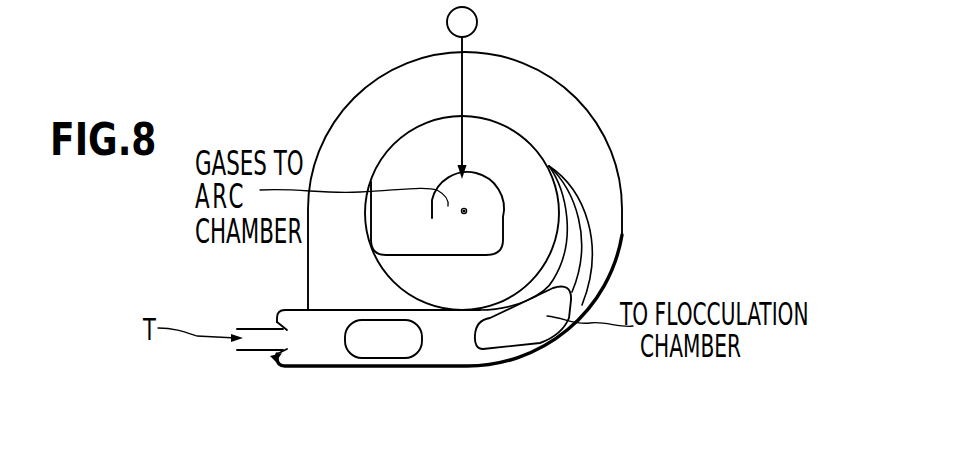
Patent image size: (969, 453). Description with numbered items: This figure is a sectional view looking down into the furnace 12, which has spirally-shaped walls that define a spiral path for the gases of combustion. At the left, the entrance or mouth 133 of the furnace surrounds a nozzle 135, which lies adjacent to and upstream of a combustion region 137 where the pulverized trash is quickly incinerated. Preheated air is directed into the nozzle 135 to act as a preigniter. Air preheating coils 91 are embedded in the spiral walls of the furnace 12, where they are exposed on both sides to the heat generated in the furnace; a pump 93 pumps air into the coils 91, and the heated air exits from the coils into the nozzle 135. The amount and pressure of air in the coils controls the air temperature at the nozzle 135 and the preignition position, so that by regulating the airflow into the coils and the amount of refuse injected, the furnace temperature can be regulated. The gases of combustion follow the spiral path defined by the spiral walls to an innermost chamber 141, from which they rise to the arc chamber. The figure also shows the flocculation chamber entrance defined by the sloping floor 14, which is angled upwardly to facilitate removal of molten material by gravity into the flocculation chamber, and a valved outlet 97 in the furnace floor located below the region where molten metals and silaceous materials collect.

The furnace 12 is at (652, 240).
The sloping floor 14 is at (557, 360).
The air preheating coils 91 is at (516, 228).
The pump 93 is at (520, 20).
The valved outlet 97 is at (638, 13).
The entrance or mouth 133 is at (248, 293).
The nozzle 135 is at (243, 351).
The combustion region 137 is at (328, 371).
The innermost chamber 141 is at (464, 208).